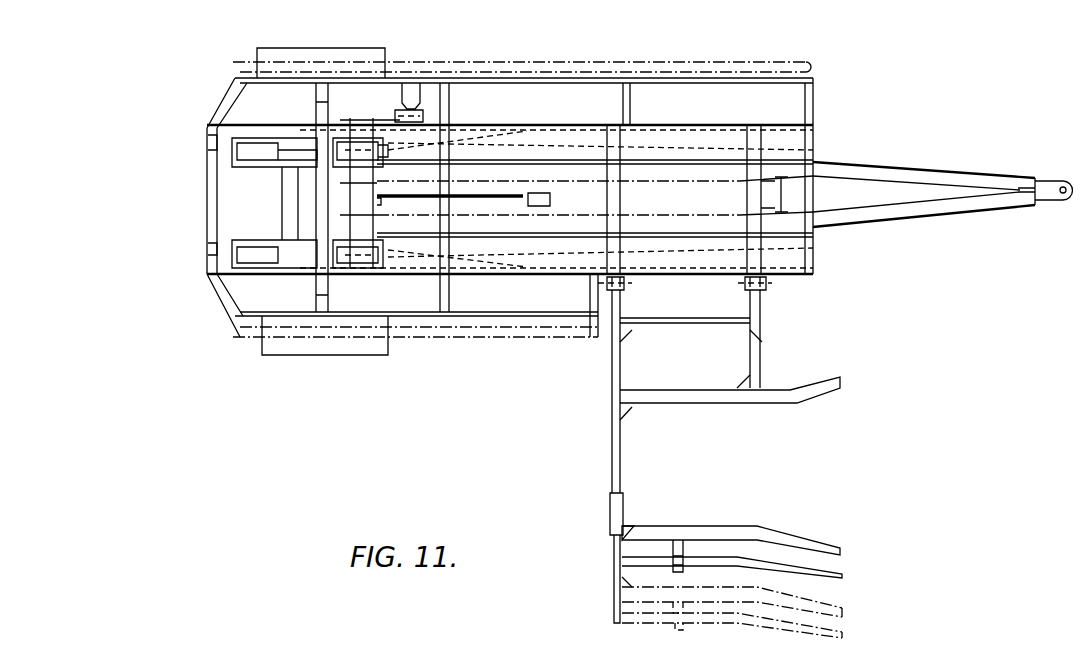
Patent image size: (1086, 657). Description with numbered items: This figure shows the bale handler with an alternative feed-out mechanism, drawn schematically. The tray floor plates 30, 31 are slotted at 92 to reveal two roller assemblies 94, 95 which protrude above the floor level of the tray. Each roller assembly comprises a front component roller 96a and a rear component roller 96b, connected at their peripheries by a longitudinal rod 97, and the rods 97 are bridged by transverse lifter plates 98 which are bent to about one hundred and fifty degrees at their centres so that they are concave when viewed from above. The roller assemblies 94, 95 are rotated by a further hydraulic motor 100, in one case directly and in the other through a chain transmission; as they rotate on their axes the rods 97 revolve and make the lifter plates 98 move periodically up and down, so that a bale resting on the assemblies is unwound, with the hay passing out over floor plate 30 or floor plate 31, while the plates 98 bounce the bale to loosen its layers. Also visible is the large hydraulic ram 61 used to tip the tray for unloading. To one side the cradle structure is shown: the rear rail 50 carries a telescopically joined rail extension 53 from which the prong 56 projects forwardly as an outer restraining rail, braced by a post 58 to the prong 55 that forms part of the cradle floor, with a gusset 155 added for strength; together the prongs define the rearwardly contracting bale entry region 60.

The tray floor plate 31 is at (518, 123).
The tray floor plate 30 is at (493, 272).
The roller assembly 95 is at (256, 138).
The front component roller 96a is at (236, 152).
The longitudinal rod 97 is at (290, 153).
The rear component roller 96b is at (358, 147).
The slot 92 is at (268, 245).
The roller assembly 94 is at (236, 255).
The transverse lifter plate 98 is at (306, 218).
The hydraulic motor 100 is at (445, 130).
The hydraulic ram 61 is at (514, 197).
The rear rail 50 is at (610, 460).
The rail extension 53 is at (612, 548).
The gusset 155 is at (622, 526).
The prong 55 is at (737, 526).
The post 58 is at (682, 552).
The prong 56 is at (808, 567).
The bale entry region 60 is at (840, 510).